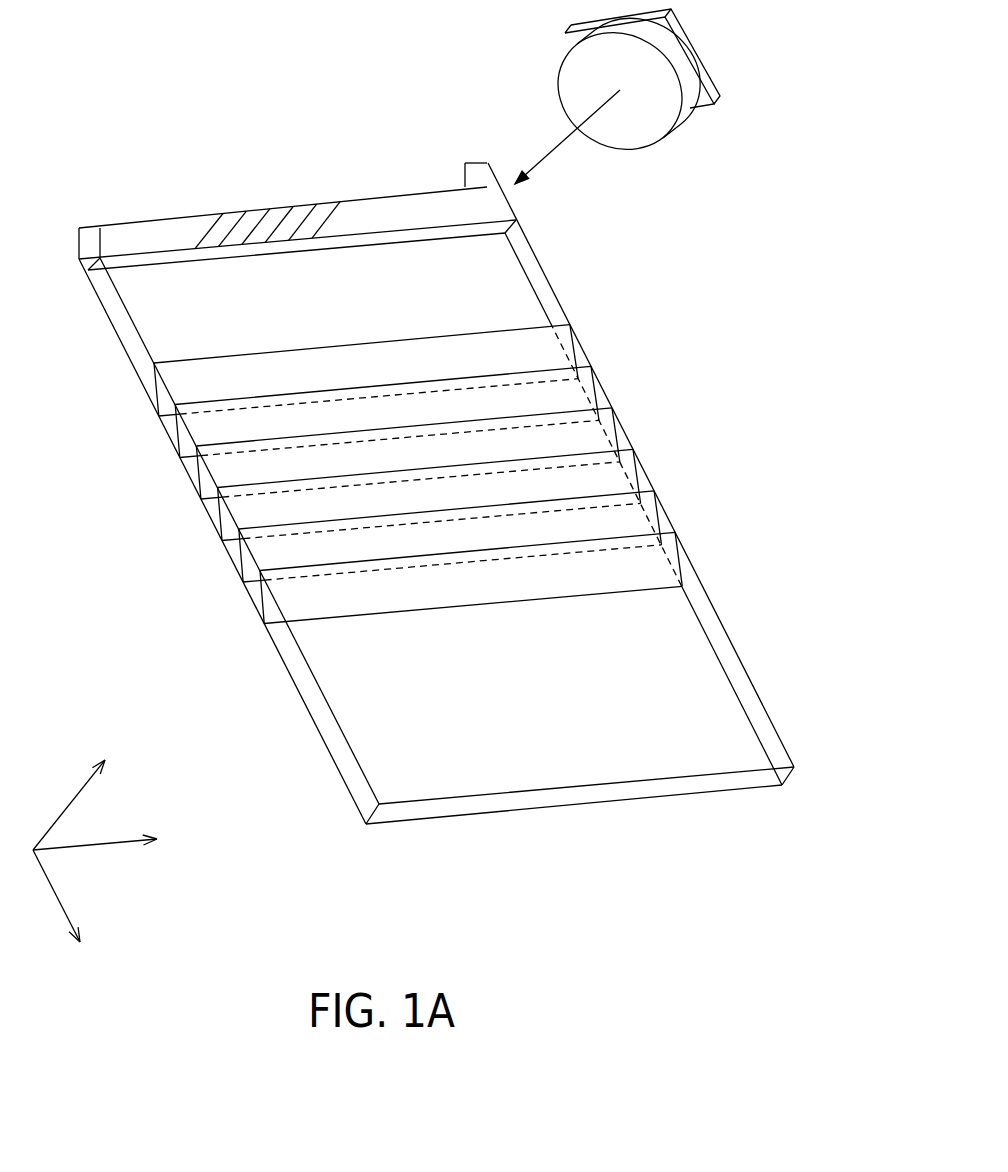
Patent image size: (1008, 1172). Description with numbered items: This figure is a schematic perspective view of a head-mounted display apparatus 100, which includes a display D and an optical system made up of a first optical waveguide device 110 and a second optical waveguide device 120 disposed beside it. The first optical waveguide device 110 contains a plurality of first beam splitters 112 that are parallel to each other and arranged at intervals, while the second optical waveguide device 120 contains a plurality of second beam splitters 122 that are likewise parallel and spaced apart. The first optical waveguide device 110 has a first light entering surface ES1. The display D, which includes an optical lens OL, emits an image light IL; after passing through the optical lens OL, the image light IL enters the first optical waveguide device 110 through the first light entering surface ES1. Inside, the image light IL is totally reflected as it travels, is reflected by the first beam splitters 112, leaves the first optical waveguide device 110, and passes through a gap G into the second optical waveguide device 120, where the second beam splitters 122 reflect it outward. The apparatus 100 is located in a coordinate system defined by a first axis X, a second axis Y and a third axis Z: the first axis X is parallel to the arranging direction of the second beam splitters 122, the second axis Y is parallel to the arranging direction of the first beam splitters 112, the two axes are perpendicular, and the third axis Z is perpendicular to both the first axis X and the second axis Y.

The head-mounted display apparatus 100 is at (776, 880).
The first optical waveguide device 110 is at (150, 237).
The first beam splitters 112 is at (270, 222).
The second optical waveguide device 120 is at (162, 322).
The second beam splitters 122 is at (568, 397).
The gap G is at (79, 258).
The first light entering surface ES1 is at (507, 200).
The image light IL is at (563, 140).
The display D is at (662, 38).
The optical lens OL is at (683, 117).
The first axis X is at (61, 916).
The second axis Y is at (105, 840).
The third axis Z is at (76, 788).